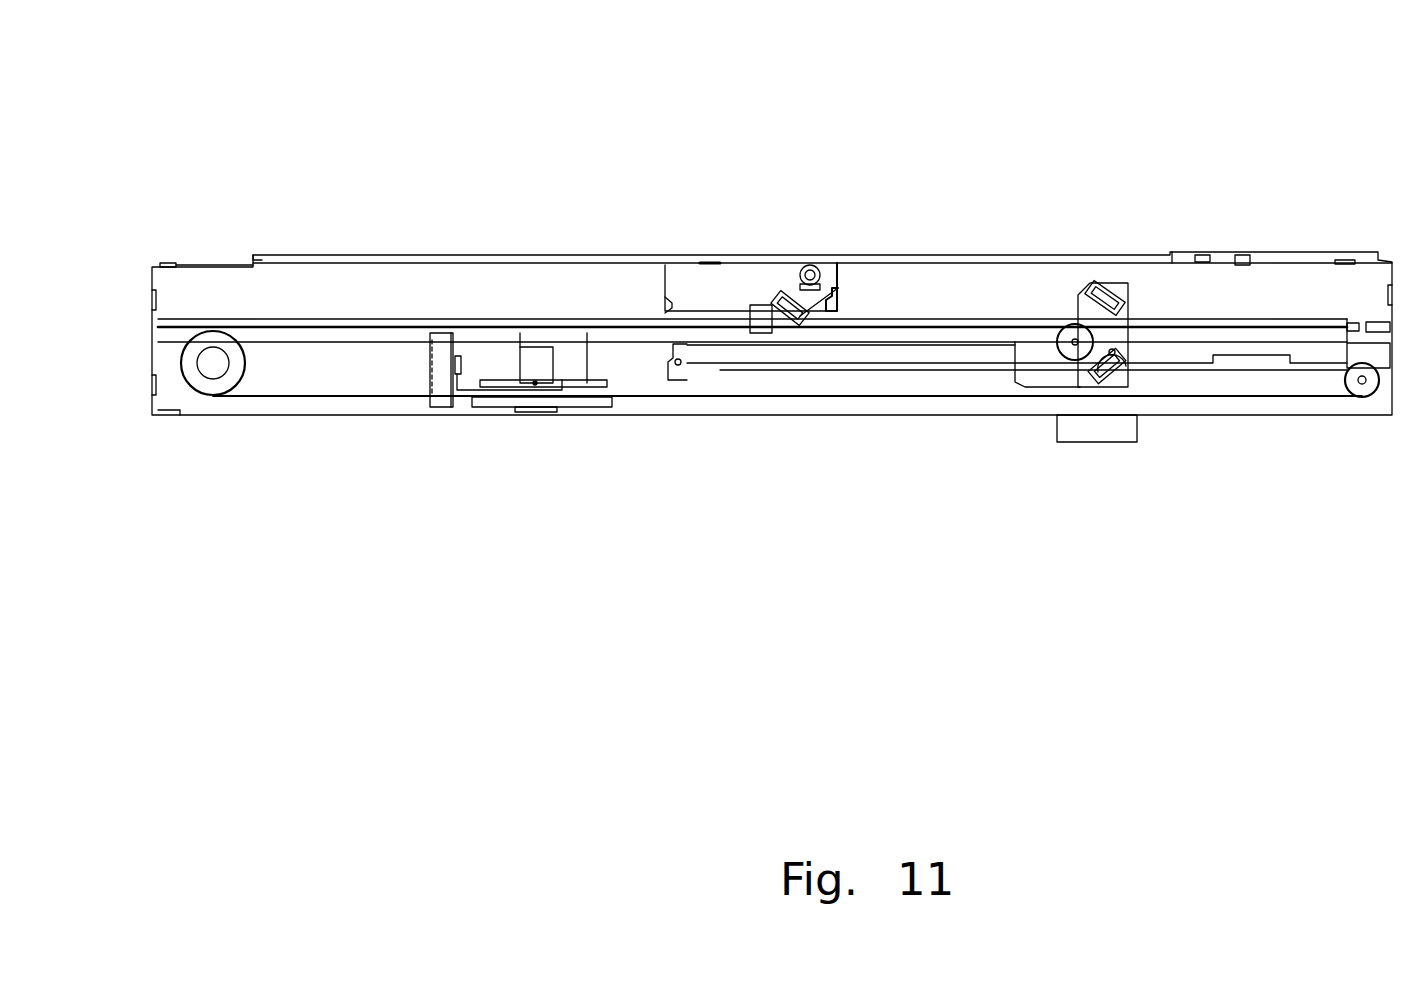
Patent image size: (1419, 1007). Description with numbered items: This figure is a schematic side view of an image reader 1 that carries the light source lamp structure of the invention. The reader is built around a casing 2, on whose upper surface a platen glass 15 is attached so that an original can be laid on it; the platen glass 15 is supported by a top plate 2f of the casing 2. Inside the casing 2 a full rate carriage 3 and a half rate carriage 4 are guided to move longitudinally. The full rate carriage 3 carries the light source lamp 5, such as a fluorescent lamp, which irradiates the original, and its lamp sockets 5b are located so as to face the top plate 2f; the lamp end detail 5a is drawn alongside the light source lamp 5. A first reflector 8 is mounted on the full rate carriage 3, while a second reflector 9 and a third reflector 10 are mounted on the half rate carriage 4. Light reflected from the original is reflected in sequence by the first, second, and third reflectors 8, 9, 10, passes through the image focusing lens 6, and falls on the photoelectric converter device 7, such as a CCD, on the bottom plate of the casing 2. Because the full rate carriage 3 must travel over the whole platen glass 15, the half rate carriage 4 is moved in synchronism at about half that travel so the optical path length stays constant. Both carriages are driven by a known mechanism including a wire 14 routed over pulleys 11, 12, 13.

The image reader 1 is at (410, 253).
The casing 2 is at (200, 280).
The top plate 2f is at (222, 266).
The full rate carriage 3 is at (718, 282).
The half rate carriage 4 is at (1083, 293).
The light source lamp 5 is at (799, 171).
The detection switch 5a is at (822, 263).
The lamp socket 5b is at (790, 296).
The image focusing lens 6 is at (535, 357).
The photoelectric converter device 7 is at (457, 364).
The first reflector 8 is at (842, 291).
The second reflector 9 is at (1133, 293).
The third reflector 10 is at (1133, 362).
The pulley 11 is at (1058, 330).
The pulley 12 is at (213, 365).
The pulley 13 is at (1362, 385).
The wire 14 is at (900, 398).
The platen glass 15 is at (583, 262).